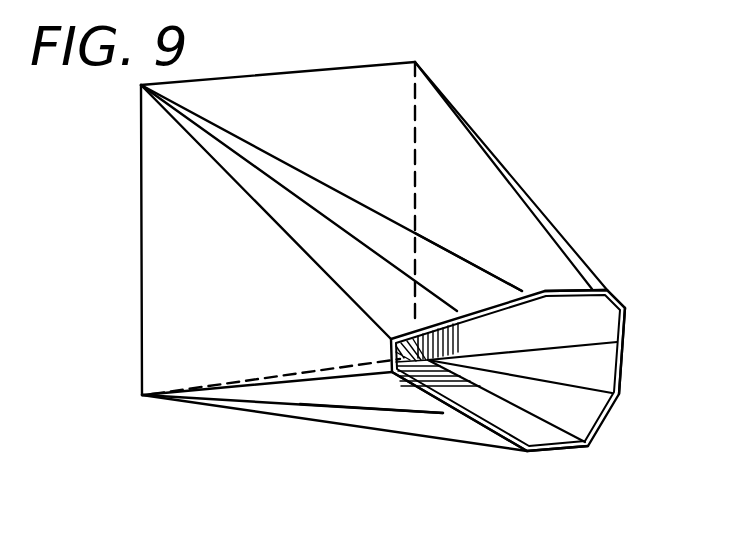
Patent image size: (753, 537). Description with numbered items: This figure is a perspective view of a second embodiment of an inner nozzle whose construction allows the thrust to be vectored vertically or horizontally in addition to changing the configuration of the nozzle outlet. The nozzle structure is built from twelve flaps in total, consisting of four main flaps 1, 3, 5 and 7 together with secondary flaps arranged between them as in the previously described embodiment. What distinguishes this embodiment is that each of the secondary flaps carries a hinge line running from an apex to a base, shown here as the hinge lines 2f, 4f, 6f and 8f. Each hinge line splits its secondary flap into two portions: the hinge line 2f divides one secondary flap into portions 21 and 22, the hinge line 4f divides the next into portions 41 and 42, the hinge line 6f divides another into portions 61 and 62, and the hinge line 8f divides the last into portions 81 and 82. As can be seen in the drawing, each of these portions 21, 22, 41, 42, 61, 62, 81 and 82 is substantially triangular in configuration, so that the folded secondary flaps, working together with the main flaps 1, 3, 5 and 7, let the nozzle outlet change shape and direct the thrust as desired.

The main flap 1 is at (278, 194).
The hinge line 2f is at (360, 239).
The main flap 3 is at (270, 240).
The secondary flap portion 21 is at (299, 198).
The secondary flap portion 22 is at (468, 262).
The main flap 7 is at (508, 370).
The secondary flap portion 62 is at (522, 367).
The secondary flap portion 61 is at (506, 401).
The hinge line 6f is at (606, 383).
The main flap 5 is at (534, 436).
The hinge line 8f is at (549, 212).
The secondary flap portion 81 is at (578, 258).
The secondary flap portion 82 is at (623, 290).
The secondary flap portion 41 is at (342, 394).
The hinge line 4f is at (387, 413).
The secondary flap portion 42 is at (445, 436).